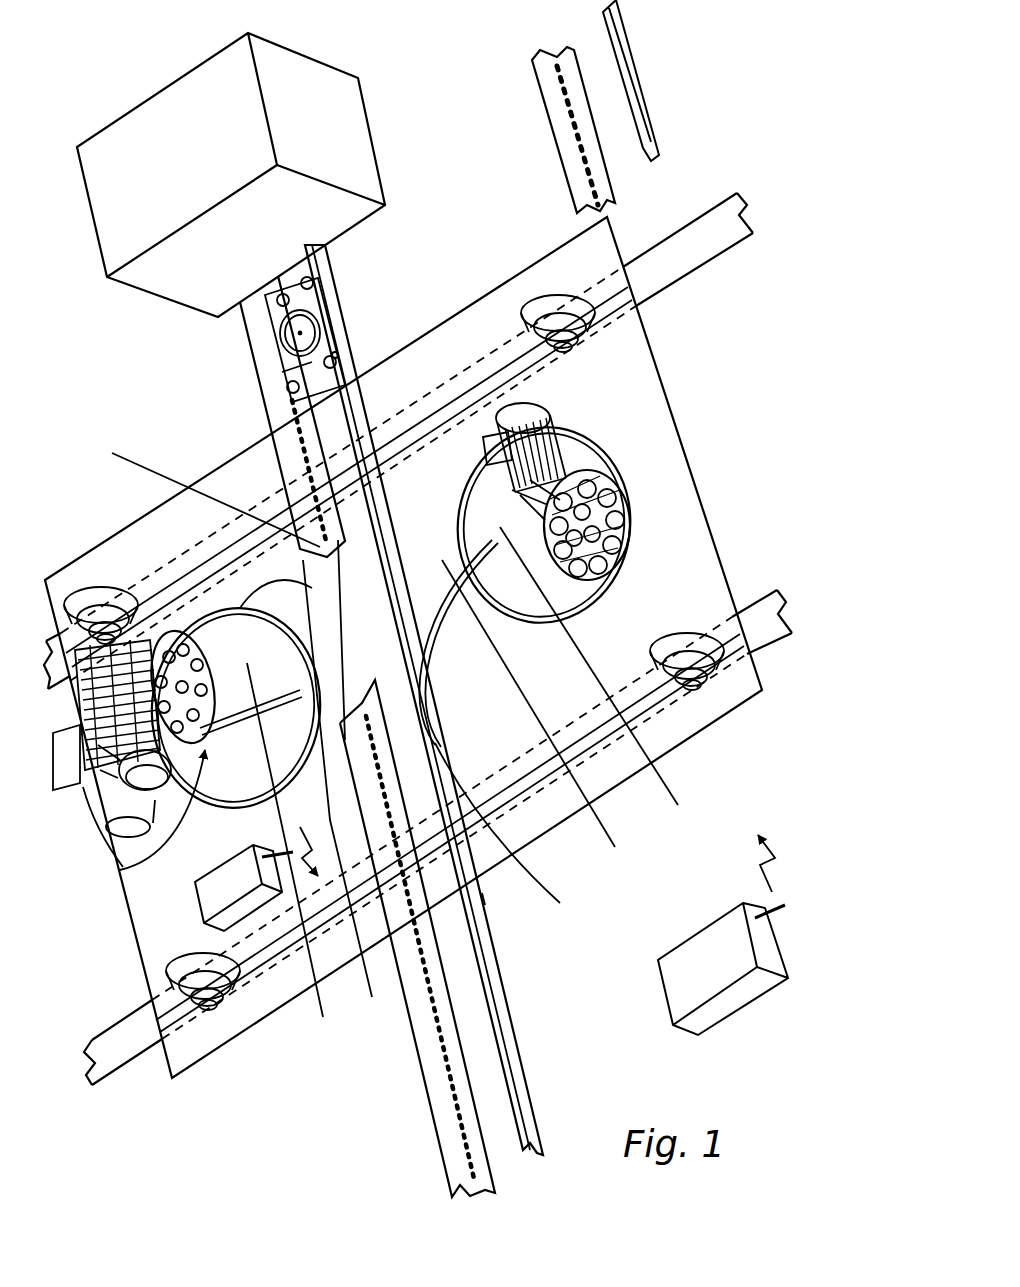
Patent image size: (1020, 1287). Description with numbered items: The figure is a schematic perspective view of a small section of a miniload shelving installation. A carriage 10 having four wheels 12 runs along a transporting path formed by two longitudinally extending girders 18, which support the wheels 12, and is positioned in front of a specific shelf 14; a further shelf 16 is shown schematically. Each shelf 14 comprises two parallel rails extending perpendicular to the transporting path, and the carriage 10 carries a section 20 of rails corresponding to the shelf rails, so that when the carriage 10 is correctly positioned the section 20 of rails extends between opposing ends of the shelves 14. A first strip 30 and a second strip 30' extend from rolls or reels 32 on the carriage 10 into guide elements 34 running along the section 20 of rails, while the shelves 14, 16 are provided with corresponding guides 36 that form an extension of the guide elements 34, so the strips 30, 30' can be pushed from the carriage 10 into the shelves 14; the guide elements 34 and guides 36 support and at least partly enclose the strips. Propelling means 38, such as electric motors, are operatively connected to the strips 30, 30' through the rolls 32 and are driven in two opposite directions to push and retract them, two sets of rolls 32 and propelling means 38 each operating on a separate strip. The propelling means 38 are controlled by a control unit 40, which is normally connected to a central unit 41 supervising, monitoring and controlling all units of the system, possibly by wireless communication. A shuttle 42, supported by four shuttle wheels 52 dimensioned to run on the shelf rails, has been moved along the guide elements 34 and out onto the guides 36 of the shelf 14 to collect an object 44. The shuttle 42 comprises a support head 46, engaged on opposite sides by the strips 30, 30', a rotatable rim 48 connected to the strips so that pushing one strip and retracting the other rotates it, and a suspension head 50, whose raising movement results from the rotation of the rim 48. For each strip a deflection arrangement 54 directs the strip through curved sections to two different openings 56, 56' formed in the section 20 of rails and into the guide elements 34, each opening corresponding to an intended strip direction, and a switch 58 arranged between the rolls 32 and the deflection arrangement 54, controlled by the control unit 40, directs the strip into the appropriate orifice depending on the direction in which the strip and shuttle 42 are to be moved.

The carriage 10 is at (678, 447).
The wheels 12 is at (712, 690).
The shelf 14 is at (327, 263).
The further shelf 16 is at (660, 92).
The girders 18 is at (731, 240).
The section of rails 20 is at (582, 870).
The first strip 30 is at (298, 852).
The second strip 30' is at (606, 676).
The rolls or reels 32 is at (147, 595).
The guide elements 34 is at (485, 905).
The guides 36 is at (278, 365).
The propelling means 38 is at (567, 404).
The control unit 40 is at (207, 898).
The central unit 41 is at (705, 1020).
The shuttle 42 is at (264, 347).
The object 44 is at (365, 155).
The support head 46 is at (305, 362).
The rotatable rim 48 is at (332, 340).
The suspension head 50 is at (313, 320).
The shuttle wheels 52 is at (282, 305).
The deflection arrangement 54 is at (474, 776).
The openings 56 is at (206, 509).
The openings 56' is at (515, 829).
The switch 58 is at (120, 870).